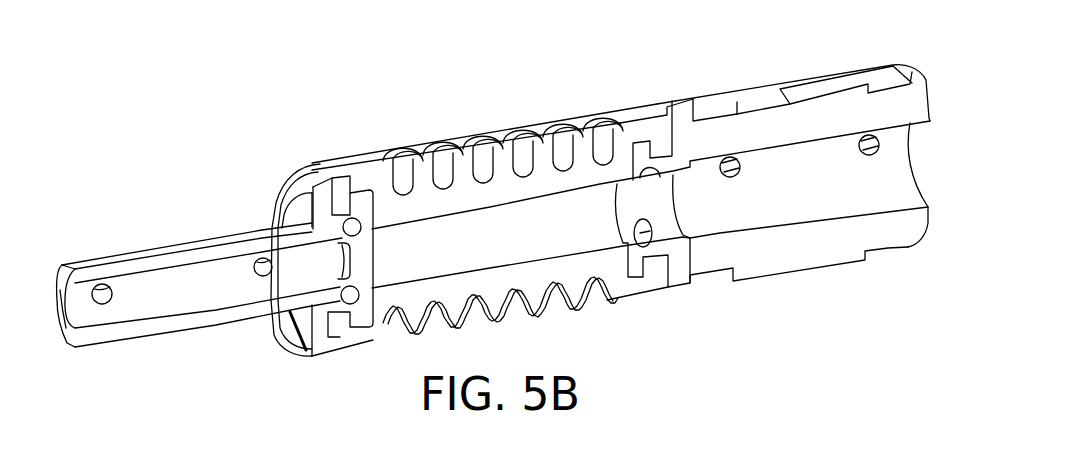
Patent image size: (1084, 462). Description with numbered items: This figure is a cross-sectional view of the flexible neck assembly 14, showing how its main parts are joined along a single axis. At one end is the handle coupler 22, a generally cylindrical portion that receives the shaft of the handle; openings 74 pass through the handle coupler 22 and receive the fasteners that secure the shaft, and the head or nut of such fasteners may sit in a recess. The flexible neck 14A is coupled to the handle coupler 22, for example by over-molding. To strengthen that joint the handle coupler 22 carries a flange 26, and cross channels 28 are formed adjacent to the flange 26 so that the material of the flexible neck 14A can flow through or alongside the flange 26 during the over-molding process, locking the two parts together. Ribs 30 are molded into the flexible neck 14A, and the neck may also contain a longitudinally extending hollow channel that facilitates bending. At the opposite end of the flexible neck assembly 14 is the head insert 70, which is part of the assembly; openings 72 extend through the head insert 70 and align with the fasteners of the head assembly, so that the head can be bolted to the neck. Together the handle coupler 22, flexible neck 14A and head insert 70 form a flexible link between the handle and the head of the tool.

The flexible neck assembly 14 is at (438, 77).
The flexible neck 14A is at (502, 198).
The handle coupler 22 is at (712, 103).
The flange 26 is at (643, 150).
The cross channels 28 is at (648, 233).
The ribs 30 is at (440, 138).
The head insert 70 is at (193, 247).
The openings 72 is at (108, 299).
The openings 74 is at (735, 174).